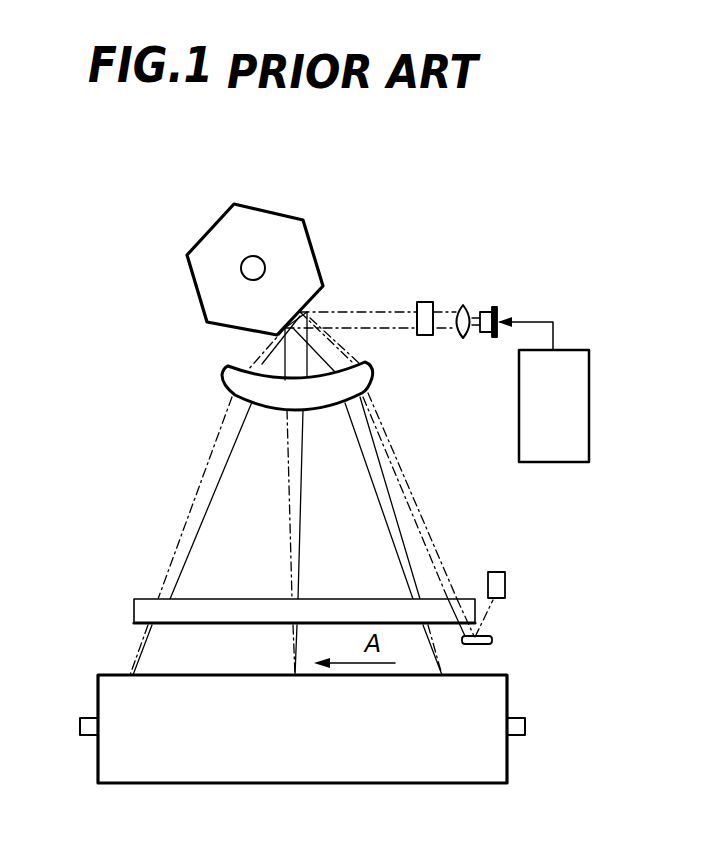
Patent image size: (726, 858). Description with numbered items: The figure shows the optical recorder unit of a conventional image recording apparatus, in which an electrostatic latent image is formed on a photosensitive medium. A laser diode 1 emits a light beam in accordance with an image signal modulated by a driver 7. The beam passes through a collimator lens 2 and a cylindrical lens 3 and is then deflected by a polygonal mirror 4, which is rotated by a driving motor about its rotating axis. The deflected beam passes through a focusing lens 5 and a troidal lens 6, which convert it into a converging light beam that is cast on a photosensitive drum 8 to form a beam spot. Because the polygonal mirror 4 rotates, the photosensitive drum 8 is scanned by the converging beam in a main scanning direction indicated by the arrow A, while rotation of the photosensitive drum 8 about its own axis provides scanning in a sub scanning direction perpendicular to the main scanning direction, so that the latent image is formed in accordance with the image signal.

The laser diode 1 is at (495, 303).
The collimator lens 2 is at (468, 303).
The cylindrical lens 3 is at (425, 300).
The polygonal mirror 4 is at (313, 243).
The focusing lens 5 is at (222, 375).
The troidal lens 6 is at (142, 598).
The driver 7 is at (518, 402).
The photosensitive drum 8 is at (303, 784).